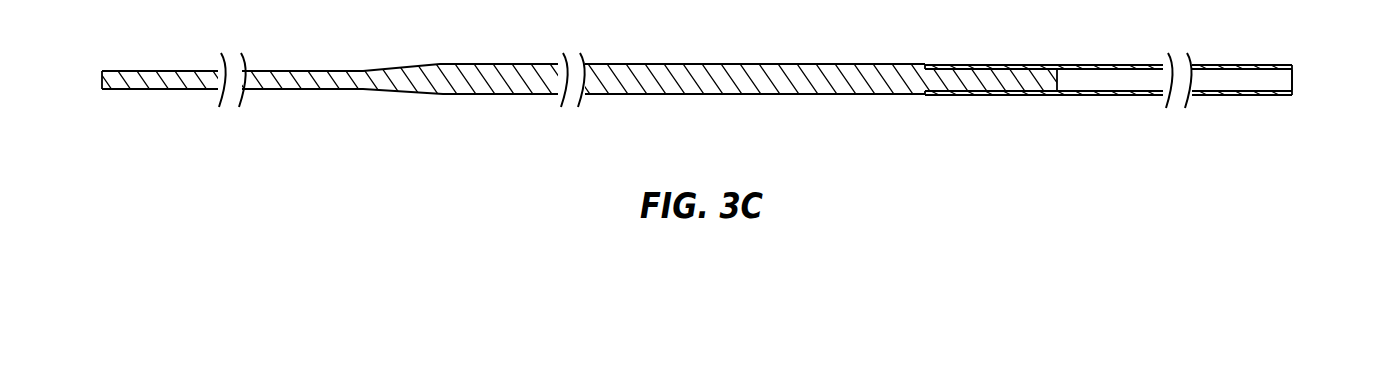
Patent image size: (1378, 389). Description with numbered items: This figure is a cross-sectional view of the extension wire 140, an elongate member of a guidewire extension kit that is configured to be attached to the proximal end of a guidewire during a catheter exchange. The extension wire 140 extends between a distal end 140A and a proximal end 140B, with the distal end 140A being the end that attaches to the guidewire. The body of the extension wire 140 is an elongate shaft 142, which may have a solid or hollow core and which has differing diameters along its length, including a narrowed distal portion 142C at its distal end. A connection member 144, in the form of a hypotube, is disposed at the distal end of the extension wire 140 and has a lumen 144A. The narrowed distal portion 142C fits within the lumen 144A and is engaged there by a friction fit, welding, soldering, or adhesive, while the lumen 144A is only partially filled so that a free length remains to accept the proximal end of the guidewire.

The extension wire 140 is at (1002, 122).
The distal end 140A is at (1293, 82).
The proximal end 140B is at (102, 80).
The elongate shaft 142 is at (812, 64).
The narrowed distal portion 142C is at (975, 83).
The connection member 144 is at (1207, 65).
The lumen 144A is at (1279, 78).